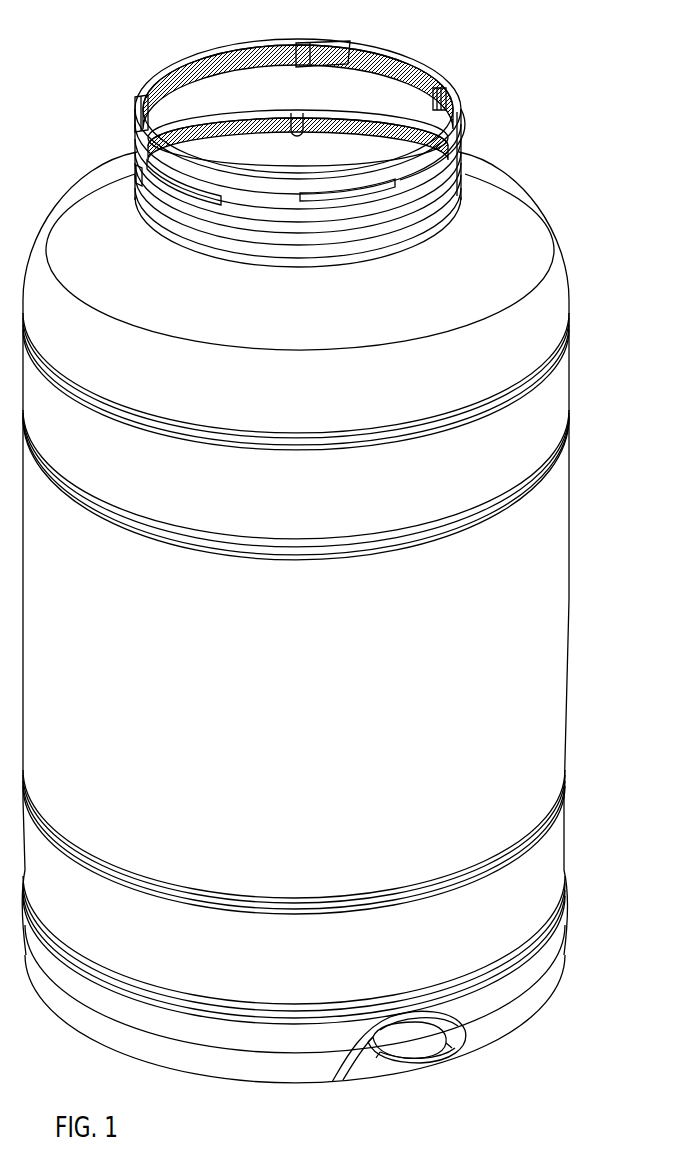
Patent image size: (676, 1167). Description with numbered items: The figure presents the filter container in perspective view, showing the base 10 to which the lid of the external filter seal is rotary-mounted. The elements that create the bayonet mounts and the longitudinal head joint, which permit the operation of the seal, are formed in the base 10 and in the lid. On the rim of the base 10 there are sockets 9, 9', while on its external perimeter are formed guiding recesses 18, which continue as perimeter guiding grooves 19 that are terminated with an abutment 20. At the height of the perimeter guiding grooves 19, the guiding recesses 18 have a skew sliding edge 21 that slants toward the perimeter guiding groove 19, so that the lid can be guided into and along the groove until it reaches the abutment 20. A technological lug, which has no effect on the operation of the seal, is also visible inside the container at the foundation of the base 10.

The socket 9 is at (327, 119).
The socket 9' is at (352, 40).
The base 10 is at (135, 108).
The guiding recess 18 is at (433, 157).
The perimeter guiding groove 19 is at (433, 227).
The abutment 20 is at (138, 168).
The skew sliding edge 21 is at (450, 175).